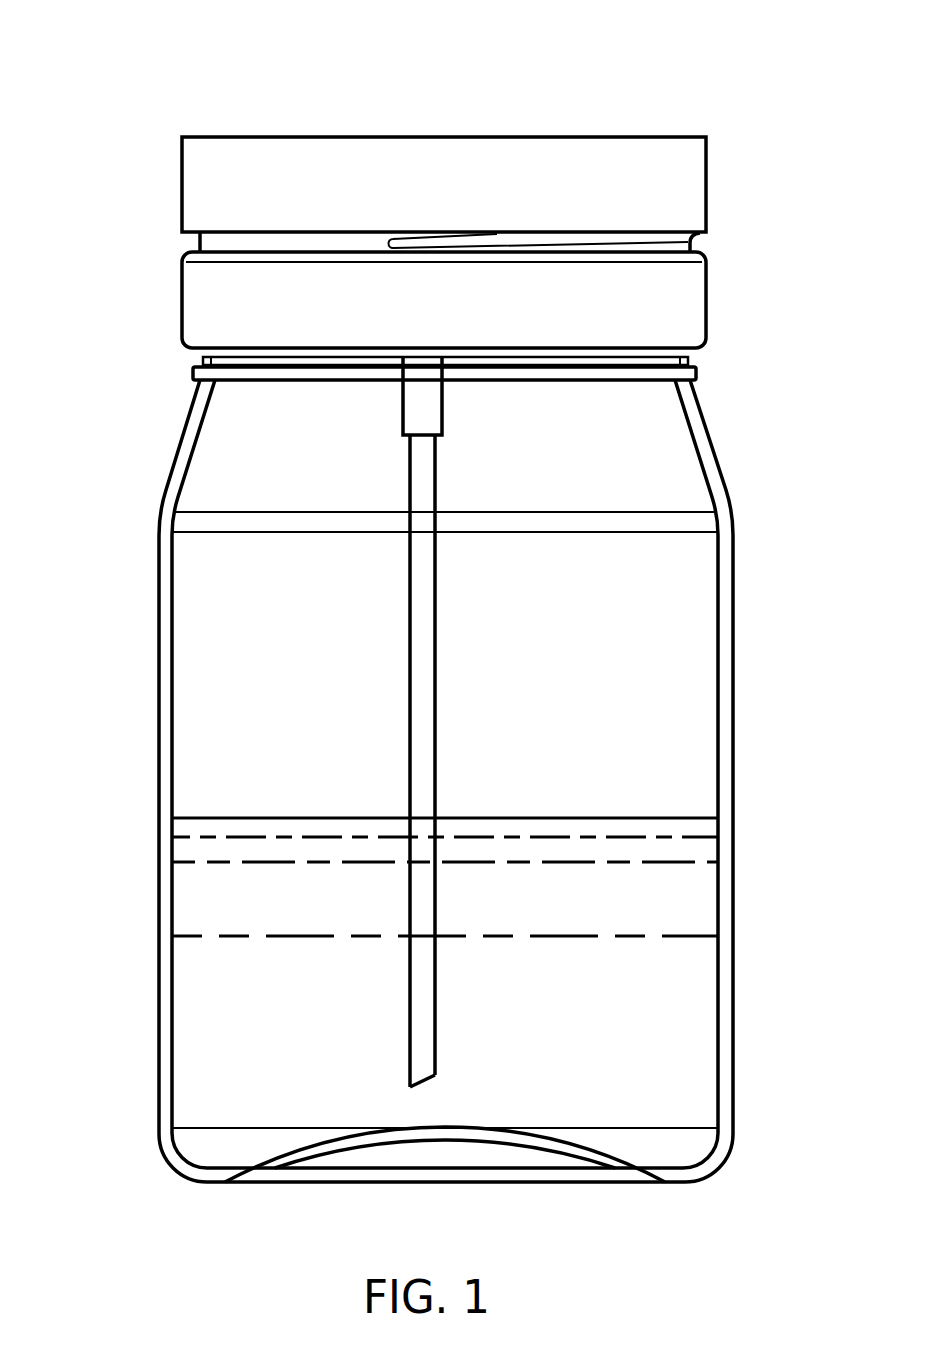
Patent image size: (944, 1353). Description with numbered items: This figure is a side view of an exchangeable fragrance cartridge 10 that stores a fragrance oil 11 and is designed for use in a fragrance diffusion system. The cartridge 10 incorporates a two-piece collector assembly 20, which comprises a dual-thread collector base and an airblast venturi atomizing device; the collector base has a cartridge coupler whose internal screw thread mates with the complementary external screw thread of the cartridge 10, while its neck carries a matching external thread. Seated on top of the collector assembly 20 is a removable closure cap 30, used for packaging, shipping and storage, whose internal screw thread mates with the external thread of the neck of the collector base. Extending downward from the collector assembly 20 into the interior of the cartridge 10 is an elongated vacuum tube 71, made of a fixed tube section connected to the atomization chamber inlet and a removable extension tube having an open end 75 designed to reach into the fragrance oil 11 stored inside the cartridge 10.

The exchangeable fragrance cartridge 10 is at (780, 154).
The removable closure cap 30 is at (182, 170).
The collector assembly 20 is at (152, 319).
The fragrance oil 11 is at (520, 818).
The elongated vacuum tube 71 is at (412, 700).
The open end 75 is at (428, 1081).